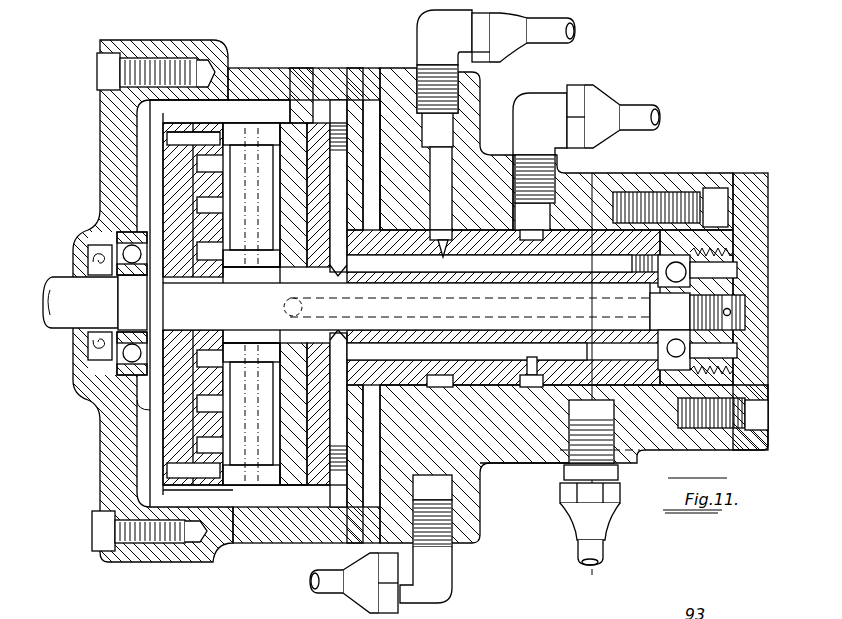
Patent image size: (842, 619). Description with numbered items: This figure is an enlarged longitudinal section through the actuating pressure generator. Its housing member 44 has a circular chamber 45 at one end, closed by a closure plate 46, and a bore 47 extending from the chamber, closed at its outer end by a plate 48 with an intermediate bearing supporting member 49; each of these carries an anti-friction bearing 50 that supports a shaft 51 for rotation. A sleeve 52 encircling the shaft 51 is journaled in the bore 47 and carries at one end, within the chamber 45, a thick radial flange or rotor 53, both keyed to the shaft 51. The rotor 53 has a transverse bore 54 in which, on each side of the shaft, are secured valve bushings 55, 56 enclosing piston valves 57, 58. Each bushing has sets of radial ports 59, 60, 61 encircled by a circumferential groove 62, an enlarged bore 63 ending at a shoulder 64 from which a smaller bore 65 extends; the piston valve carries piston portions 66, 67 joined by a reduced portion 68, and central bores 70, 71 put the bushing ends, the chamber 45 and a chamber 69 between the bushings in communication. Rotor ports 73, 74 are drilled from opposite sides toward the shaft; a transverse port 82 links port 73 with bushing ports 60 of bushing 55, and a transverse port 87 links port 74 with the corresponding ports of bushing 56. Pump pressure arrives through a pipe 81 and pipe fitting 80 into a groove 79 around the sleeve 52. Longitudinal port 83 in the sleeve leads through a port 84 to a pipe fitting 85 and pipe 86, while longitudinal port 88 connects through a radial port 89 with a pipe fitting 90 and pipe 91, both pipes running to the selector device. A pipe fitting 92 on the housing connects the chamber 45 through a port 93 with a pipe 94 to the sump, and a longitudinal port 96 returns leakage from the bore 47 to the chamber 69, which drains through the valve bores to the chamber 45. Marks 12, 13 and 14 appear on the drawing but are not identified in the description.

The fluid passage 12 is at (342, 303).
The flow path 13 is at (600, 366).
The pin 14 is at (250, 305).
The housing member 44 is at (343, 80).
The circular chamber 45 is at (372, 125).
The closure plate 46 is at (108, 473).
The bore 47 is at (660, 450).
The plate 48 is at (755, 173).
The bearing supporting member 49 is at (718, 173).
The anti-friction bearing 50 is at (97, 402).
The shaft 51 is at (67, 328).
The sleeve 52 is at (628, 190).
The rotor 53 is at (318, 122).
The transverse bore 54 is at (180, 492).
The valve bushing 55 is at (296, 122).
The valve bushing 56 is at (300, 535).
The piston valve 57 is at (236, 130).
The piston valve 58 is at (247, 485).
The radial ports 59 is at (220, 256).
The radial ports 60 is at (222, 198).
The radial ports 61 is at (219, 348).
The circumferential groove 62 is at (200, 163).
The enlarged bore 63 is at (228, 280).
The shoulder 64 is at (179, 307).
The smaller bore 65 is at (280, 128).
The piston portion 66 is at (252, 373).
The piston portion 67 is at (251, 193).
The reduced portion 68 is at (253, 197).
The chamber 69 is at (138, 415).
The bore 70 is at (252, 258).
The bore 71 is at (252, 412).
The port 73 is at (331, 371).
The port 74 is at (354, 449).
The groove 79 is at (591, 439).
The pipe fitting 80 is at (620, 493).
The pipe 81 is at (605, 550).
The transverse port 82 is at (493, 223).
The port 83 is at (525, 283).
The port 84 is at (448, 257).
The pipe fitting 85 is at (498, 45).
The pipe 86 is at (555, 38).
The transverse port 87 is at (442, 306).
The port 88 is at (530, 343).
The radial port 89 is at (545, 348).
The pipe fitting 90 is at (520, 128).
The pipe 91 is at (640, 110).
The pipe fitting 92 is at (455, 572).
The port 93 is at (450, 490).
The pipe 94 is at (330, 595).
The port 96 is at (692, 311).